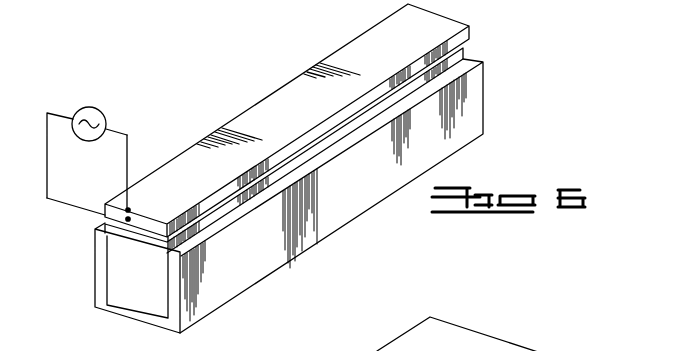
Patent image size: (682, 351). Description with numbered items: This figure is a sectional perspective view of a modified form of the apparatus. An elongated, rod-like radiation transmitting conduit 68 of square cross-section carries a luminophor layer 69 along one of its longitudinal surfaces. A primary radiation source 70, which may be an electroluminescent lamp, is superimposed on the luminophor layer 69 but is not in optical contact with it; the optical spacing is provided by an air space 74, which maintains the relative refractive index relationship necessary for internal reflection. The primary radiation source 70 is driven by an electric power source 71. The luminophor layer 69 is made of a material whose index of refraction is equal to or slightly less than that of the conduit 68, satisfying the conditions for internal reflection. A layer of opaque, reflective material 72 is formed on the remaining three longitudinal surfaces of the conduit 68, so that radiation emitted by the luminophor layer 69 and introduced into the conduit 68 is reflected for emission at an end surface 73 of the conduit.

The radiation transmitting conduit 68 is at (122, 300).
The luminophor layer 69 is at (465, 48).
The primary radiation source 70 is at (252, 117).
The electric power source 71 is at (89, 106).
The opaque reflective material 72 is at (212, 298).
The end surface 73 is at (137, 277).
The air space 74 is at (105, 221).